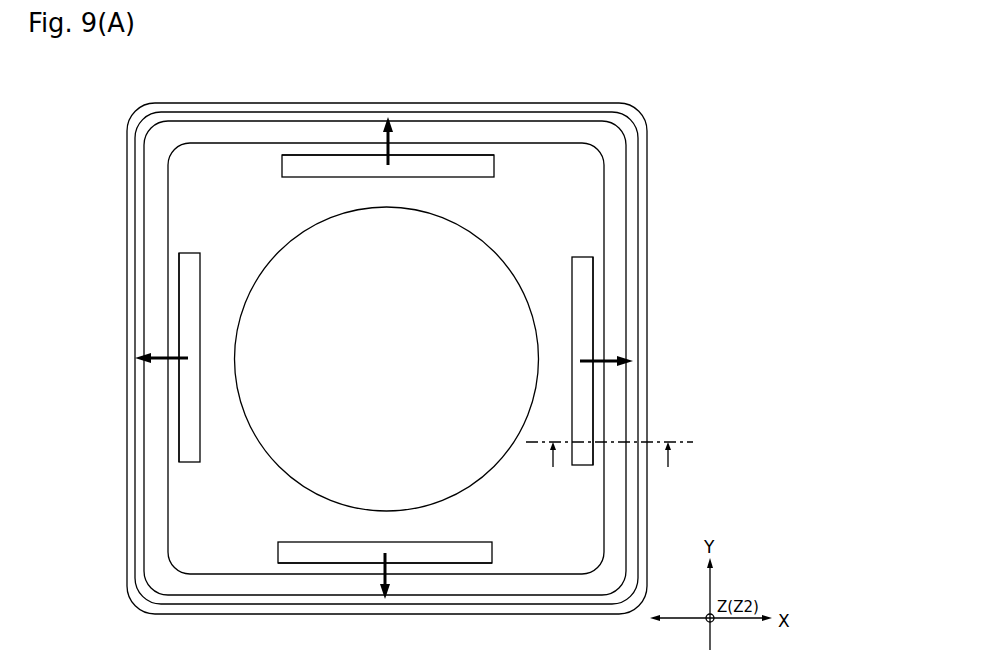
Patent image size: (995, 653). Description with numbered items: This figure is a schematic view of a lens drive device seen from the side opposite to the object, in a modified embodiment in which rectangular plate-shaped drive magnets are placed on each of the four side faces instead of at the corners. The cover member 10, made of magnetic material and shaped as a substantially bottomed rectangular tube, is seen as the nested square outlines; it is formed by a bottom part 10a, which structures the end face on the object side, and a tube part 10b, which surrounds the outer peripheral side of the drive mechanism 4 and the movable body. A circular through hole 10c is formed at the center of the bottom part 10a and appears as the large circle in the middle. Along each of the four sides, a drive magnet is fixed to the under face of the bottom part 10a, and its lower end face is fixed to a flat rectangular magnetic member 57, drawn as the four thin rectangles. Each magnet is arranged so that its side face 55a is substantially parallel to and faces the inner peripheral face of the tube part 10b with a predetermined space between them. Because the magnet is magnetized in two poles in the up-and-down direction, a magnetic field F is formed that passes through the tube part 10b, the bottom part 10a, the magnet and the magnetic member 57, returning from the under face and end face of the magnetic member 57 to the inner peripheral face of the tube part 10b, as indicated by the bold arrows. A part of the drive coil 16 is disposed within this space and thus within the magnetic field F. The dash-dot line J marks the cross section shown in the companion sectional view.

The drive mechanism 4 is at (658, 322).
The cover member 10 is at (387, 337).
The tube part 10b is at (427, 103).
The drive coil 16 is at (291, 121).
The bottom part 10a is at (576, 214).
The circular through hole 10c is at (236, 387).
The magnetic member 57 is at (459, 170).
The side face 55a is at (481, 155).
The magnetic field F is at (386, 128).
The J-J cross section J is at (609, 455).